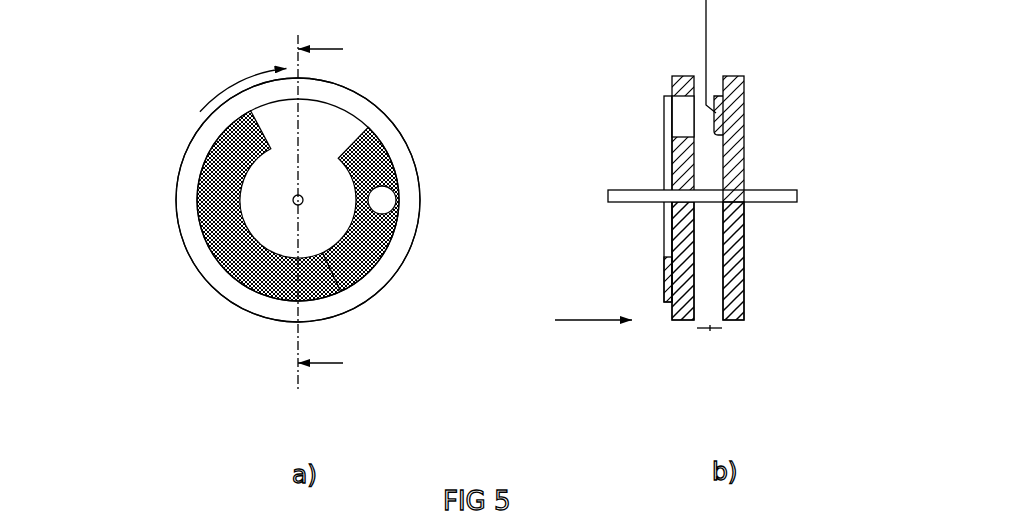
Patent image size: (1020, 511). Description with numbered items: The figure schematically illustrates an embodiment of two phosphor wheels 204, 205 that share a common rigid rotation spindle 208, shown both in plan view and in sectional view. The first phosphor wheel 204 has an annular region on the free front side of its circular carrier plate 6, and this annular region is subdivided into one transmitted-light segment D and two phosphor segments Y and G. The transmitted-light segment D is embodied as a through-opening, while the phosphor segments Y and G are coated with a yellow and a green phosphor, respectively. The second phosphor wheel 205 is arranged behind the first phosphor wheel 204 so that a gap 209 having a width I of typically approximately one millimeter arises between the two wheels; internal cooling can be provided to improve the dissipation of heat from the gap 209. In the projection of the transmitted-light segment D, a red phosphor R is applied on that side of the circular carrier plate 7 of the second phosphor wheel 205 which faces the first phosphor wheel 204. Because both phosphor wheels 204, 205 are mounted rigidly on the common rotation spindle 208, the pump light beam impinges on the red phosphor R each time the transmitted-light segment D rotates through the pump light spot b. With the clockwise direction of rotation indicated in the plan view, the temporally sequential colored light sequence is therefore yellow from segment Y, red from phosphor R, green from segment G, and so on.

The first phosphor wheel 204 is at (193, 123).
The second phosphor wheel 205 is at (733, 75).
The common rigid rotation spindle 208 is at (293, 200).
The gap 209 is at (710, 313).
The circular carrier plate 6 is at (243, 313).
The circular carrier plate 7 is at (736, 312).
The transmitted-light segment D is at (320, 120).
The phosphor segment G is at (217, 173).
The red phosphor R is at (343, 130).
The phosphor segment Y is at (385, 257).
The pump light spot b is at (382, 200).
The width I is at (709, 344).